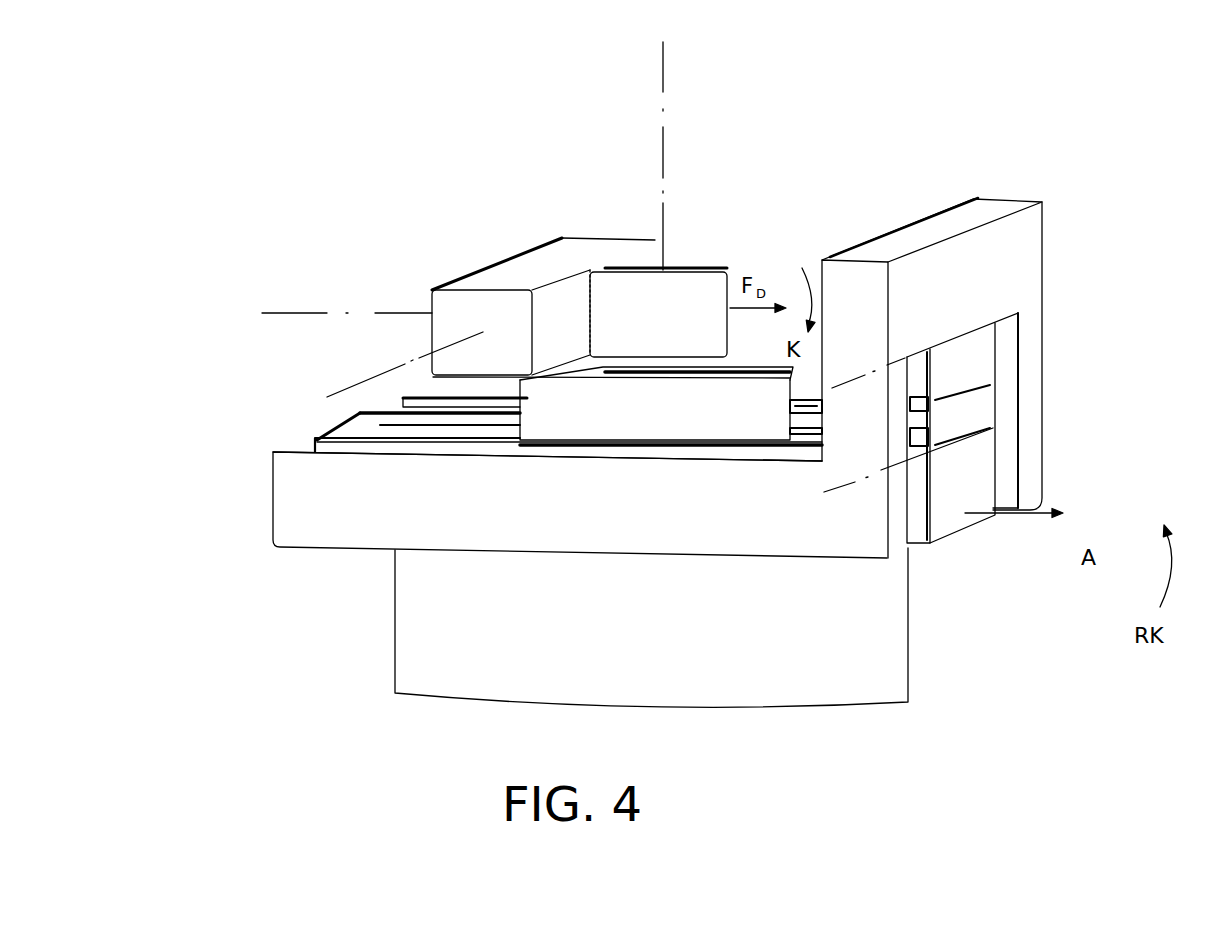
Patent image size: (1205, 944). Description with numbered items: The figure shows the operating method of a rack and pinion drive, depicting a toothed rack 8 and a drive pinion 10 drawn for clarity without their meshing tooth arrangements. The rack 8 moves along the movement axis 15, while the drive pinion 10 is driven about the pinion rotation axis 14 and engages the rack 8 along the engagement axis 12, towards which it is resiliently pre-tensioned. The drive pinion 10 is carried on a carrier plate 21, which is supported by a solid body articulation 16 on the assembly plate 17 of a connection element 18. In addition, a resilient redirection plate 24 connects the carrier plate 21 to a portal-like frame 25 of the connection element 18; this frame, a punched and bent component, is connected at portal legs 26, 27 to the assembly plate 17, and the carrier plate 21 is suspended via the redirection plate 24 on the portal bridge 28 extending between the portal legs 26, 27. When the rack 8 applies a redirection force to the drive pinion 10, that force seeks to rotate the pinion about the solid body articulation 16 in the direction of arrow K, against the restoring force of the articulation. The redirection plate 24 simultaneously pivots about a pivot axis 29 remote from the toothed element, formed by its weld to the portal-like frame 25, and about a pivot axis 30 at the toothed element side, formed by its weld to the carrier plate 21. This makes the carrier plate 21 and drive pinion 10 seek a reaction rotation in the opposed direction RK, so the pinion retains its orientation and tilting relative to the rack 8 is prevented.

The toothed rack 8 is at (521, 212).
The drive pinion 10 is at (715, 247).
The engagement axis 12 is at (326, 306).
The pinion rotation axis 14 is at (672, 93).
The movement axis 15 is at (340, 386).
The solid body articulation 16 is at (313, 442).
The assembly plate 17 is at (290, 530).
The connection element 18 is at (897, 186).
The carrier plate 21 is at (347, 425).
The redirection plate 24 is at (978, 364).
The portal-like frame 25 is at (1067, 240).
The portal leg 26 is at (893, 505).
The portal leg 27 is at (1025, 465).
The portal bridge 28 is at (997, 263).
The pivot axis remote from the toothed element 29 is at (848, 388).
The pivot axis at the toothed element side 30 is at (843, 490).